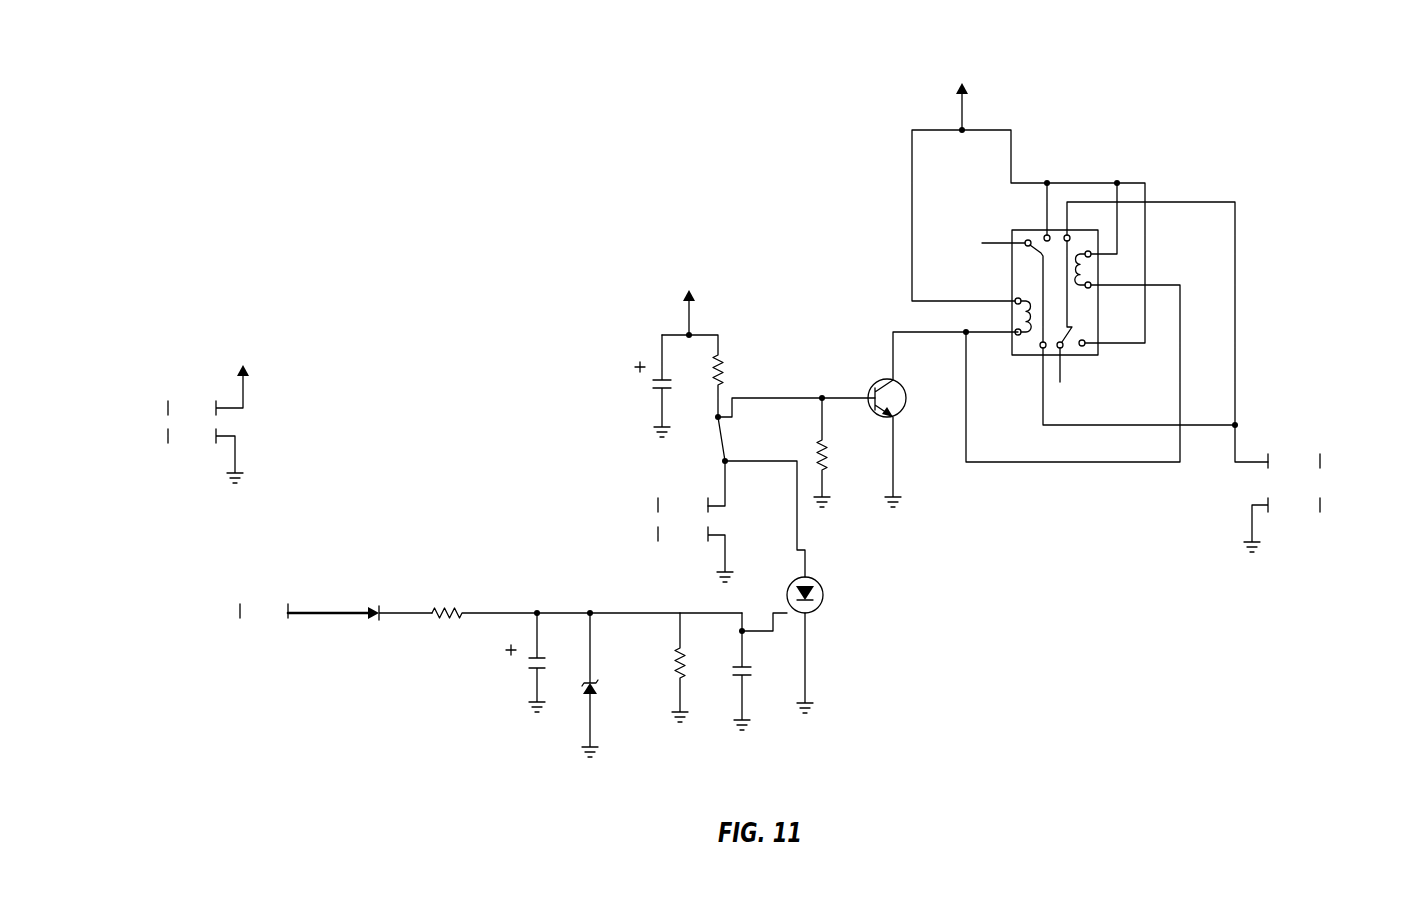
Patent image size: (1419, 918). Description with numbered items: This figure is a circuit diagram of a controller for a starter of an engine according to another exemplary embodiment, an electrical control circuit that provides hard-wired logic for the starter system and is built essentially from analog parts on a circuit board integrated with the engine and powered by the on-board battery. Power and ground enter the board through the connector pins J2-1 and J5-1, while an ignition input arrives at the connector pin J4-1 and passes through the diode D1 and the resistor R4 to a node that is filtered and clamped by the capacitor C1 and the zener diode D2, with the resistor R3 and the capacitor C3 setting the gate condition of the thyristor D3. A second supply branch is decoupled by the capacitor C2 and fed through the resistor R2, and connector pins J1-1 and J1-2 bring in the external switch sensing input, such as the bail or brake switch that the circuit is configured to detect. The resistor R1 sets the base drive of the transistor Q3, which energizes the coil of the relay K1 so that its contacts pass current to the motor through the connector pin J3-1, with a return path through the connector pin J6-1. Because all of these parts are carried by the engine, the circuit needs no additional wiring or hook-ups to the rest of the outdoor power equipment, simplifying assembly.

The 12V power connector J2-1 is at (156, 392).
The ground connector J5-1 is at (185, 454).
The ignition input connector J4-1 is at (265, 611).
The diode D1 is at (397, 597).
The resistor R4 is at (580, 610).
The capacitor C1 is at (522, 662).
The zener diode D2 is at (605, 685).
The resistor R3 is at (662, 667).
The capacitor C3 is at (745, 671).
The thyristor (SCR) D3 is at (790, 587).
The capacitor C2 is at (645, 386).
The resistor R2 is at (768, 398).
The connector pin J1-1 is at (683, 505).
The connector pin J1-2 is at (695, 553).
The resistor R1 is at (836, 452).
The transistor Q3 is at (935, 418).
The relay K1 is at (1090, 272).
The motor connector J3-1 is at (1324, 461).
The ground connector J6-1 is at (1319, 523).